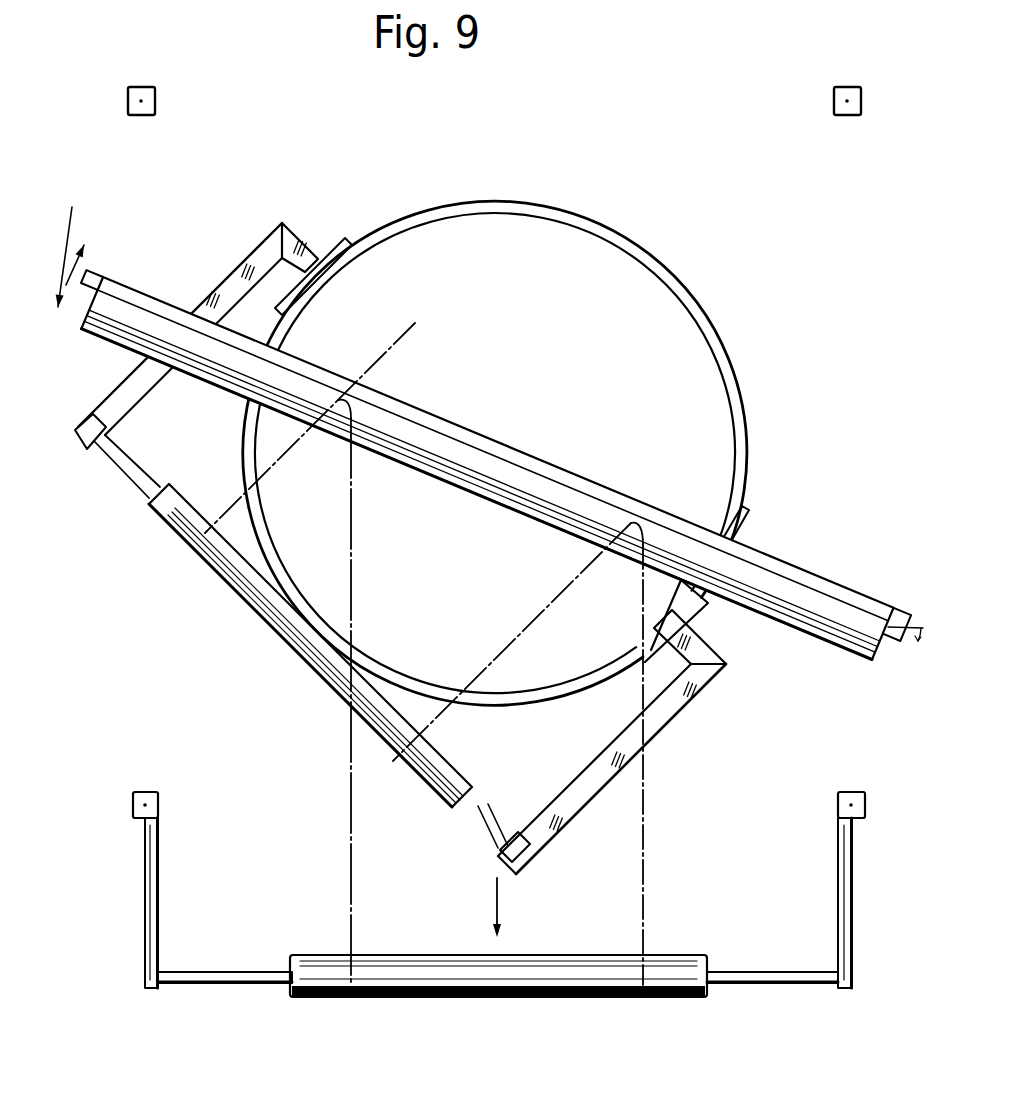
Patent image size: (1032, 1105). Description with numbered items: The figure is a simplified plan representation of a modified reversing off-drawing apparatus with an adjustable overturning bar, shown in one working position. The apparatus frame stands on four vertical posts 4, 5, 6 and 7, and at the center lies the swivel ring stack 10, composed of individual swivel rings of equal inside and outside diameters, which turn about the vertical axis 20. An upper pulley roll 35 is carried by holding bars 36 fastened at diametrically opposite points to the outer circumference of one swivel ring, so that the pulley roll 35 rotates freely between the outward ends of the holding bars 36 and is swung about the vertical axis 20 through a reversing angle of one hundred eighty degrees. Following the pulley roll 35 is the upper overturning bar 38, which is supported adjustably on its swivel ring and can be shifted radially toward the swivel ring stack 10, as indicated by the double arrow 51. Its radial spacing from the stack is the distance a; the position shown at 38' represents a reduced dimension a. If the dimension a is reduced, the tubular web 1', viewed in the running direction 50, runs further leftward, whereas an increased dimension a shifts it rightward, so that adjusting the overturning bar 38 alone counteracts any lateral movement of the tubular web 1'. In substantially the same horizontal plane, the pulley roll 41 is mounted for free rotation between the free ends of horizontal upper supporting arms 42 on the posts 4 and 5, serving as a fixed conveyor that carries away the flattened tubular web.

The tubular web 1' is at (318, 731).
The vertical post 4 is at (137, 810).
The vertical post 5 is at (853, 815).
The vertical post 6 is at (150, 88).
The vertical post 7 is at (838, 88).
The swivel ring stack 10 is at (483, 205).
The vertical axis 20 is at (497, 452).
The upper pulley roll 35 is at (205, 560).
The holding bars 36 is at (282, 222).
The upper overturning bar 38 is at (116, 492).
The overturning bar in shifted position 38' is at (466, 481).
The pulley roll 41 is at (455, 990).
The upper supporting arms 42 is at (148, 890).
The running direction 50 is at (503, 908).
The double arrow 51 is at (68, 238).
The distance a is at (915, 645).